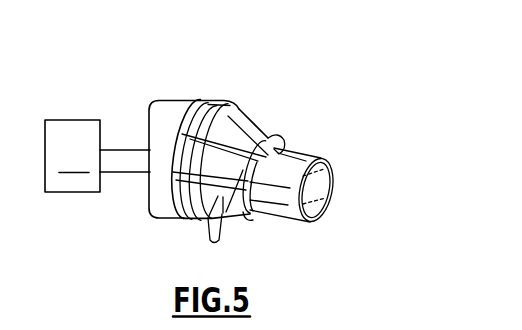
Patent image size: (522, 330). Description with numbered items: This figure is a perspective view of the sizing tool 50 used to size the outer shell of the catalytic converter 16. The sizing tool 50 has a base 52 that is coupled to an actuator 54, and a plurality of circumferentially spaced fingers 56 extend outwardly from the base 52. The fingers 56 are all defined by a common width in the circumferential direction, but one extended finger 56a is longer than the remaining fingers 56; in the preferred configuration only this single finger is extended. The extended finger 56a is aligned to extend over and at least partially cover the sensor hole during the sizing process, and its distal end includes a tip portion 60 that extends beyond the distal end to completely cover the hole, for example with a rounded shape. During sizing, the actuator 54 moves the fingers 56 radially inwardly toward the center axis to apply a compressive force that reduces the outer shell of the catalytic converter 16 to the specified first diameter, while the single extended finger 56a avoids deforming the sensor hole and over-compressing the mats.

The sizing tool 50 is at (383, 71).
The base 52 is at (158, 207).
The actuator 54 is at (97, 156).
The fingers 56 is at (212, 243).
The extended finger 56a is at (246, 143).
The catalytic converter 16 is at (303, 157).
The tip portion 60 is at (310, 178).